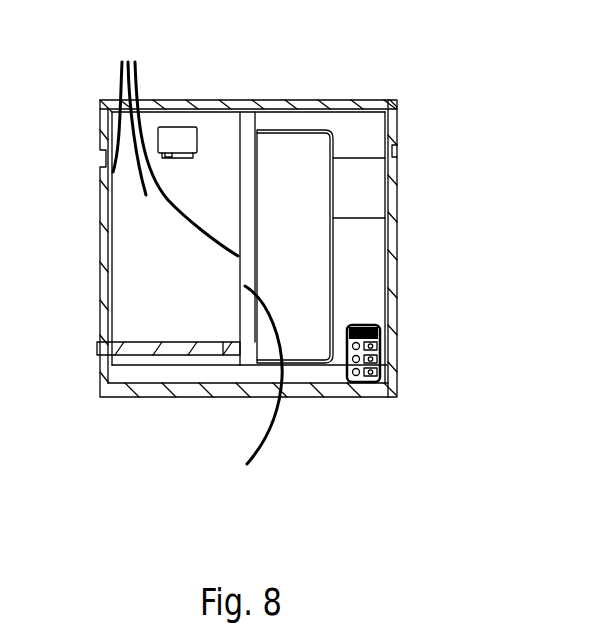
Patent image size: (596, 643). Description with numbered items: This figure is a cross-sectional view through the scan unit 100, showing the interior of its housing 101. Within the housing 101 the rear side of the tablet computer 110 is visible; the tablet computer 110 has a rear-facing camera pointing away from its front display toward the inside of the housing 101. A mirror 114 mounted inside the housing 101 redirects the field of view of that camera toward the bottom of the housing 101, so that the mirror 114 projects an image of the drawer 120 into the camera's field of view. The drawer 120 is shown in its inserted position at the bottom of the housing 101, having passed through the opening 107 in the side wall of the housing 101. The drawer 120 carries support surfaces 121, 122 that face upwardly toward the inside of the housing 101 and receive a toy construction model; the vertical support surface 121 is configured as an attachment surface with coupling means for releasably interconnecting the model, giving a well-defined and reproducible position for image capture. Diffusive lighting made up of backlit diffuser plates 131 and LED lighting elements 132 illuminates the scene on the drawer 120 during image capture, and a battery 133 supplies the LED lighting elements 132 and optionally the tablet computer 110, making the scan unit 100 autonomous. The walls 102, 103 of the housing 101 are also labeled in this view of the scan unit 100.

The scan unit 100 is at (68, 93).
The housing 101 is at (413, 405).
The side wall 102 is at (110, 207).
The top wall 103 is at (108, 115).
The opening 107 is at (107, 358).
The tablet computer 110 is at (292, 163).
The mirror 114 is at (173, 140).
The drawer 120 is at (118, 348).
The support surface 121 is at (130, 348).
The support surface 122 is at (173, 347).
The diffuser plates 131 is at (171, 144).
The LED lighting elements 132 is at (239, 391).
The battery 133 is at (360, 378).